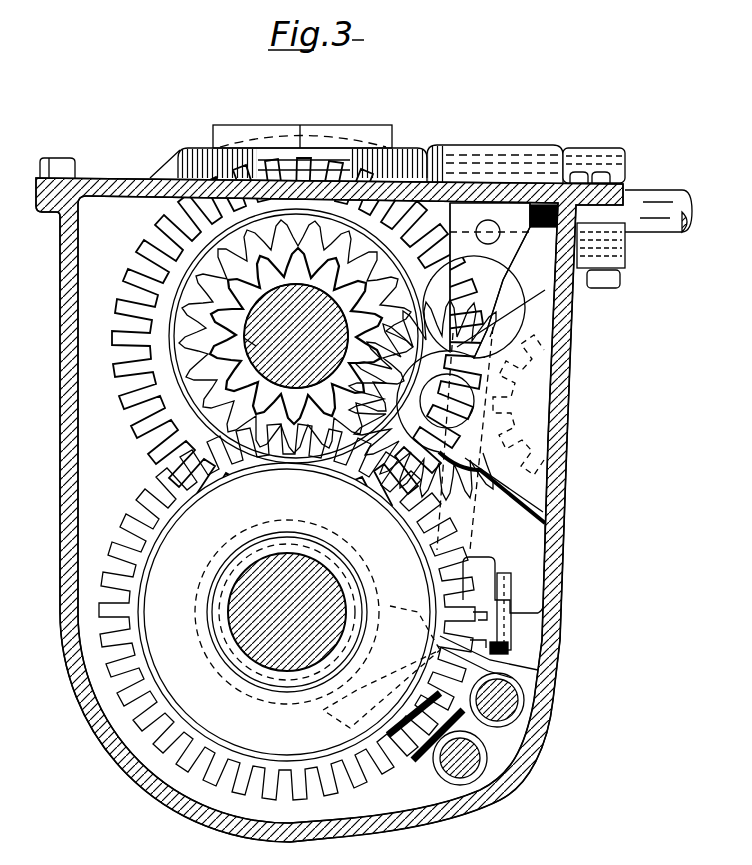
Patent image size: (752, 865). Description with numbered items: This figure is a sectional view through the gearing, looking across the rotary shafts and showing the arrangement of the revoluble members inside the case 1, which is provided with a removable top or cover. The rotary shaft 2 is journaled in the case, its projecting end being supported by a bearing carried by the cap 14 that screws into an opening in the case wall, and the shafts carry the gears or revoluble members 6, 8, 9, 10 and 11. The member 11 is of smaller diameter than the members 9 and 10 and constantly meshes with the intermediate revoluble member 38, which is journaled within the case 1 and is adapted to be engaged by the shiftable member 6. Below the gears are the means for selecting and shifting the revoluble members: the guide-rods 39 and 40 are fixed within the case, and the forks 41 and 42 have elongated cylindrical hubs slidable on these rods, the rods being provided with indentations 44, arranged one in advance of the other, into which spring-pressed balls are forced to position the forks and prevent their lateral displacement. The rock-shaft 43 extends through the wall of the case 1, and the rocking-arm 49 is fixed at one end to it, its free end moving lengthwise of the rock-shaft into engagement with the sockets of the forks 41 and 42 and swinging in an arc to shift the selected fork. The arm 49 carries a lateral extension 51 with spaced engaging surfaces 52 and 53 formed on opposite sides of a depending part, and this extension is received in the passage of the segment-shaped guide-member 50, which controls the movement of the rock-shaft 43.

The case 1 is at (62, 484).
The rotary shaft 2 is at (247, 600).
The revoluble member 6 is at (143, 545).
The revoluble member 8 is at (133, 252).
The revoluble member 9 is at (152, 315).
The revoluble member 10 is at (200, 340).
The revoluble member 11 is at (270, 348).
The cap 14 is at (248, 342).
The intermediate revoluble member 38 is at (478, 490).
The guide-rod 39 is at (503, 698).
The guide-rod 40 is at (470, 765).
The fork 41 is at (538, 670).
The fork 42 is at (405, 770).
The rock-shaft 43 is at (660, 203).
The indentations 44 is at (440, 768).
The rocking-arm 49 is at (492, 290).
The guide-member 50 is at (513, 586).
The lateral extension 51 is at (480, 563).
The engaging surface 52 is at (481, 613).
The engaging surface 53 is at (478, 642).